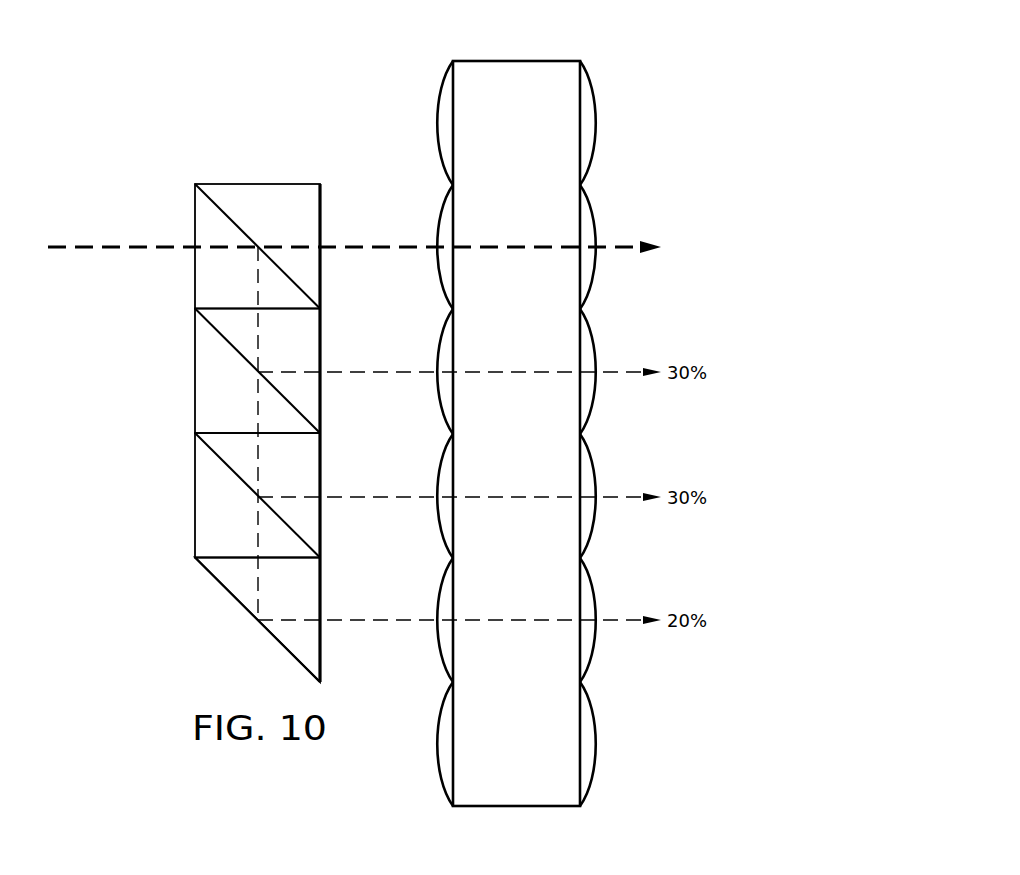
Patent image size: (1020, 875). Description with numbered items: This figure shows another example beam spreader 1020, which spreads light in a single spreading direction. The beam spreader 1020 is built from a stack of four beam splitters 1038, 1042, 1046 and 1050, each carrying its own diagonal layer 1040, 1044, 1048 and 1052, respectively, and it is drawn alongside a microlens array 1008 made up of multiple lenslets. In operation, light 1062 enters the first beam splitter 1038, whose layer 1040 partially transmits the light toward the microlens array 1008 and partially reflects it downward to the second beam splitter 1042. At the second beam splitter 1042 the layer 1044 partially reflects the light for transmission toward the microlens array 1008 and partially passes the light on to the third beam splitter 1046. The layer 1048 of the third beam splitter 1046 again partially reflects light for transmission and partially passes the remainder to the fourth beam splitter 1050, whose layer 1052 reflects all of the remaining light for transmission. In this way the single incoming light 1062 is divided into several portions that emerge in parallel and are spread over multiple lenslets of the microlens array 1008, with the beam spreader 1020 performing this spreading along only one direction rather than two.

The beam spreader 1020 is at (318, 80).
The light 1062 is at (88, 245).
The microlens array 1008 is at (598, 121).
The beam splitter 1038 is at (316, 214).
The layer 1040 is at (312, 286).
The beam splitter 1042 is at (316, 339).
The layer 1044 is at (312, 411).
The beam splitter 1046 is at (316, 464).
The layer 1048 is at (308, 534).
The beam splitter 1050 is at (314, 588).
The layer 1052 is at (306, 660).